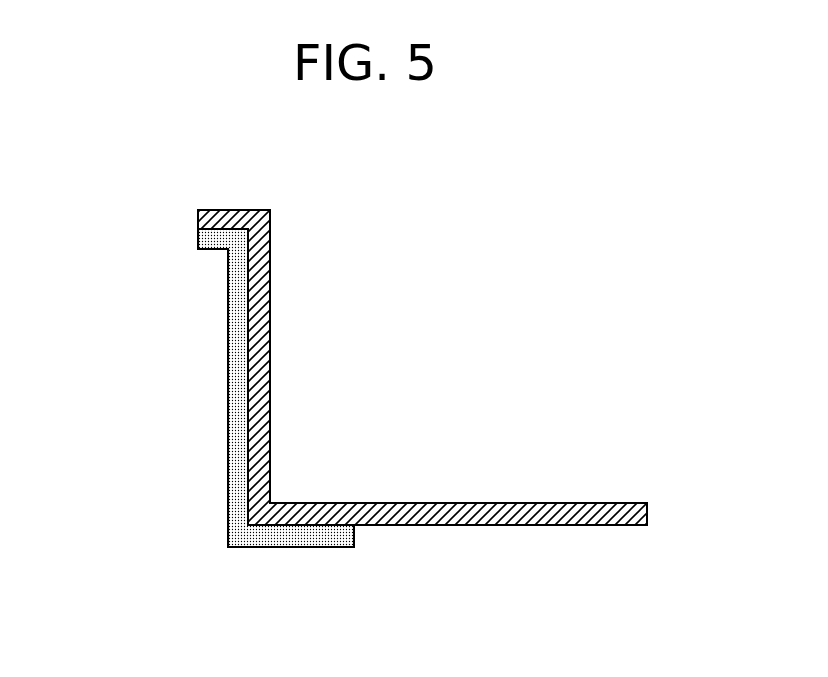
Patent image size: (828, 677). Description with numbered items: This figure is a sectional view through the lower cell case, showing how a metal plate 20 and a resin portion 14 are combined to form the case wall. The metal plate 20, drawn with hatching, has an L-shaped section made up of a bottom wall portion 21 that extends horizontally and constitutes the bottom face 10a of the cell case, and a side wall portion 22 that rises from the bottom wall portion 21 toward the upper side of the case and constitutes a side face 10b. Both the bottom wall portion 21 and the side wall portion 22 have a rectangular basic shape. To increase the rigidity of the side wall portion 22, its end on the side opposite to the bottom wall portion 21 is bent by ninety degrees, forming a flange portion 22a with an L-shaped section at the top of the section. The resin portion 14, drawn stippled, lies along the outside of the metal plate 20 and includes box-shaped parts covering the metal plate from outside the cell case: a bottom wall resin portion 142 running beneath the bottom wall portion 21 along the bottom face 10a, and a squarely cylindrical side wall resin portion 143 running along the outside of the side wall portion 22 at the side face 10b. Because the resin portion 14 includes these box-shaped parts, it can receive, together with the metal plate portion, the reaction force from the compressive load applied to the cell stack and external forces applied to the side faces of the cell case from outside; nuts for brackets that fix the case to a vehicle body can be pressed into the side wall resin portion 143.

The metal plate 20 is at (422, 335).
The bottom wall portion 21 is at (558, 503).
The side wall portion 22 is at (275, 353).
The flange portion 22a is at (215, 208).
The bottom face 10a is at (447, 446).
The side face 10b is at (218, 312).
The resin portion 14 is at (225, 442).
The bottom wall resin portion 142 is at (300, 537).
The side wall resin portion 143 is at (236, 442).